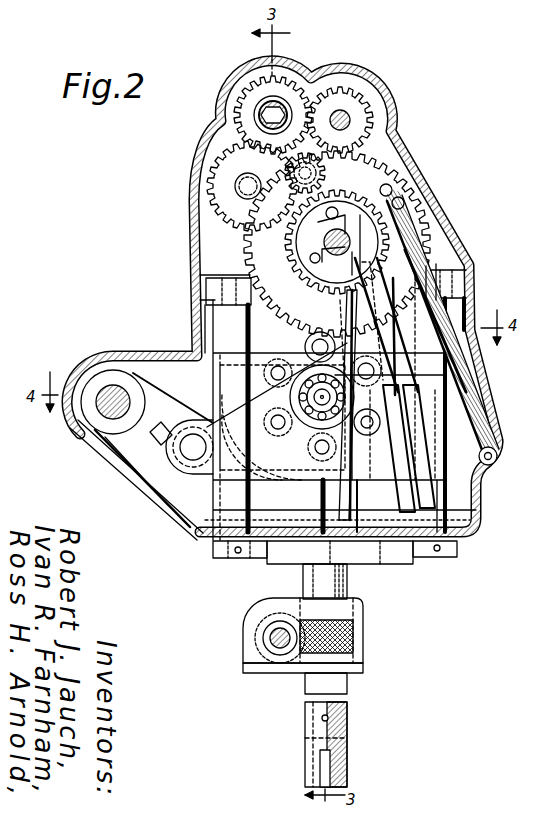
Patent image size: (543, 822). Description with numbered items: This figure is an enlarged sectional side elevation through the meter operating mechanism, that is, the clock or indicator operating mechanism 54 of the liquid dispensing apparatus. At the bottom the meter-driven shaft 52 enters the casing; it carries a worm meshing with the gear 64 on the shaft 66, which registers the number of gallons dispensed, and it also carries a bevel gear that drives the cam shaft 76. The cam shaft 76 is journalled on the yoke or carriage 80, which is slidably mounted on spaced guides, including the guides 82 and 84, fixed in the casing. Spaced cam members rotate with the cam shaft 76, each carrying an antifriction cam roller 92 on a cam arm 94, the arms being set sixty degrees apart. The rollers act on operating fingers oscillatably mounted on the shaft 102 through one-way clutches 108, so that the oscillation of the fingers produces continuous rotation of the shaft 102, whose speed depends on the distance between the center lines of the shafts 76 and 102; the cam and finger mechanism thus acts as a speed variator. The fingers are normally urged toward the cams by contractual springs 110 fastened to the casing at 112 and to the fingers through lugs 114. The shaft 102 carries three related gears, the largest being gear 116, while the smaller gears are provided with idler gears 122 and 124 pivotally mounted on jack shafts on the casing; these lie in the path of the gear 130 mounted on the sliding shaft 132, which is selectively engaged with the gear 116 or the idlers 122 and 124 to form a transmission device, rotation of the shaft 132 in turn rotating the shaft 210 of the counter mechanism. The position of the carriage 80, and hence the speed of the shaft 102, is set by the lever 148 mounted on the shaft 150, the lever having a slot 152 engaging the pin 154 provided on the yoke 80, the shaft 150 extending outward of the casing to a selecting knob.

The gear 130 is at (255, 100).
The shaft 132 is at (268, 110).
The shaft 210 is at (262, 114).
The idler gear 124 is at (365, 177).
The lug 114 is at (362, 188).
The clutch 108 is at (395, 196).
The shaft 102 is at (400, 224).
The clock operating mechanism 54 is at (430, 250).
The contractual spring 110 is at (430, 283).
The cam arm 94 is at (430, 375).
The casing fastening point 112 is at (497, 455).
The yoke or carriage 80 is at (480, 488).
The guide 82 is at (450, 524).
The antifriction cam roller 92 is at (361, 391).
The cam shaft 76 is at (312, 425).
The guide 84 is at (230, 518).
The pin 154 is at (187, 473).
The slot 152 is at (140, 465).
The lever 148 is at (137, 440).
The shaft 150 is at (110, 413).
The shaft 66 is at (279, 628).
The gear 64 is at (278, 672).
The shaft 52 is at (340, 700).
The gear 116 is at (250, 238).
The idler gear 122 is at (265, 254).